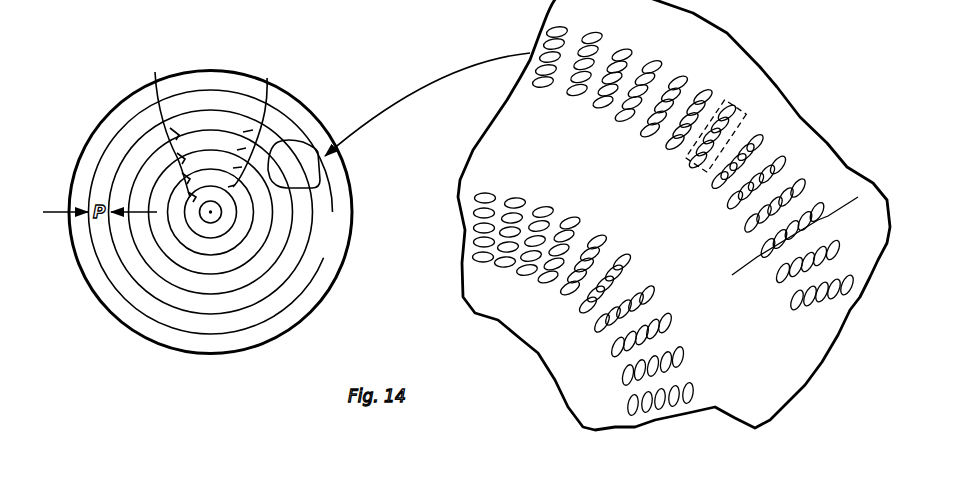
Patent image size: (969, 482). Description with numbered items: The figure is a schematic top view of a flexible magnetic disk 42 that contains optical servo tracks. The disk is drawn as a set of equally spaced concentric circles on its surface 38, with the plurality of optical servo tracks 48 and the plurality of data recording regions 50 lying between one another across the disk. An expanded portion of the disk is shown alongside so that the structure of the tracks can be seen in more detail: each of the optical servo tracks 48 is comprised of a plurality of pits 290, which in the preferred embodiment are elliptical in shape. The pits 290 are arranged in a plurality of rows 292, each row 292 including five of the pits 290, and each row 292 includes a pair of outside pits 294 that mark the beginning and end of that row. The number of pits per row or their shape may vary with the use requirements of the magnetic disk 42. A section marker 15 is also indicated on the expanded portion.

The surface 38 is at (339, 244).
The flexible magnetic disk 42 is at (270, 347).
The optical servo tracks 48 is at (628, 123).
The data recording regions 50 is at (253, 124).
The pits 290 is at (563, 70).
The rows 292 is at (683, 161).
The outside pits 294 is at (731, 118).
The section line 15 is at (827, 185).